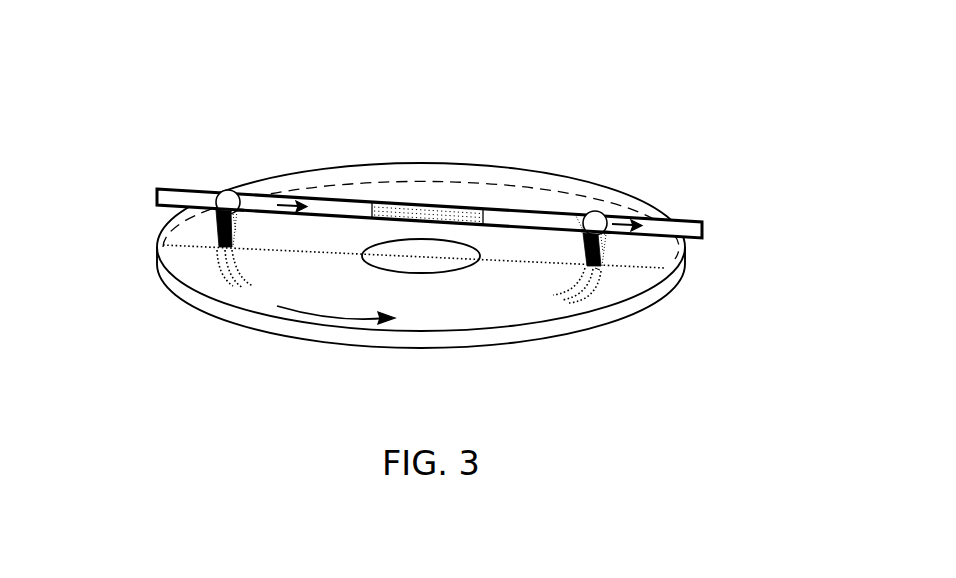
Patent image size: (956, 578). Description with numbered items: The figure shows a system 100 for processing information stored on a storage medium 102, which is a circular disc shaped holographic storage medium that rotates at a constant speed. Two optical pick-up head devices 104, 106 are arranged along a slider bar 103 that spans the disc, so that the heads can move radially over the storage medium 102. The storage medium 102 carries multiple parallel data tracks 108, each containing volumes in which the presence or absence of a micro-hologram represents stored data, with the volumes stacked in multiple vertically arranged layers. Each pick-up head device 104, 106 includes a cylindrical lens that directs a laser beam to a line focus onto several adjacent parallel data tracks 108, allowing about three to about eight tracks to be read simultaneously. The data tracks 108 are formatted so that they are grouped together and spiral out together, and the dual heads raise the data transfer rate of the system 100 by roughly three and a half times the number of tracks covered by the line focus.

The system 100 is at (672, 63).
The storage medium 102 is at (158, 272).
The slider bar 103 is at (157, 198).
The optical pick-up head device 104 is at (225, 192).
The optical pick-up head device 106 is at (597, 214).
The parallel data tracks 108 is at (603, 279).